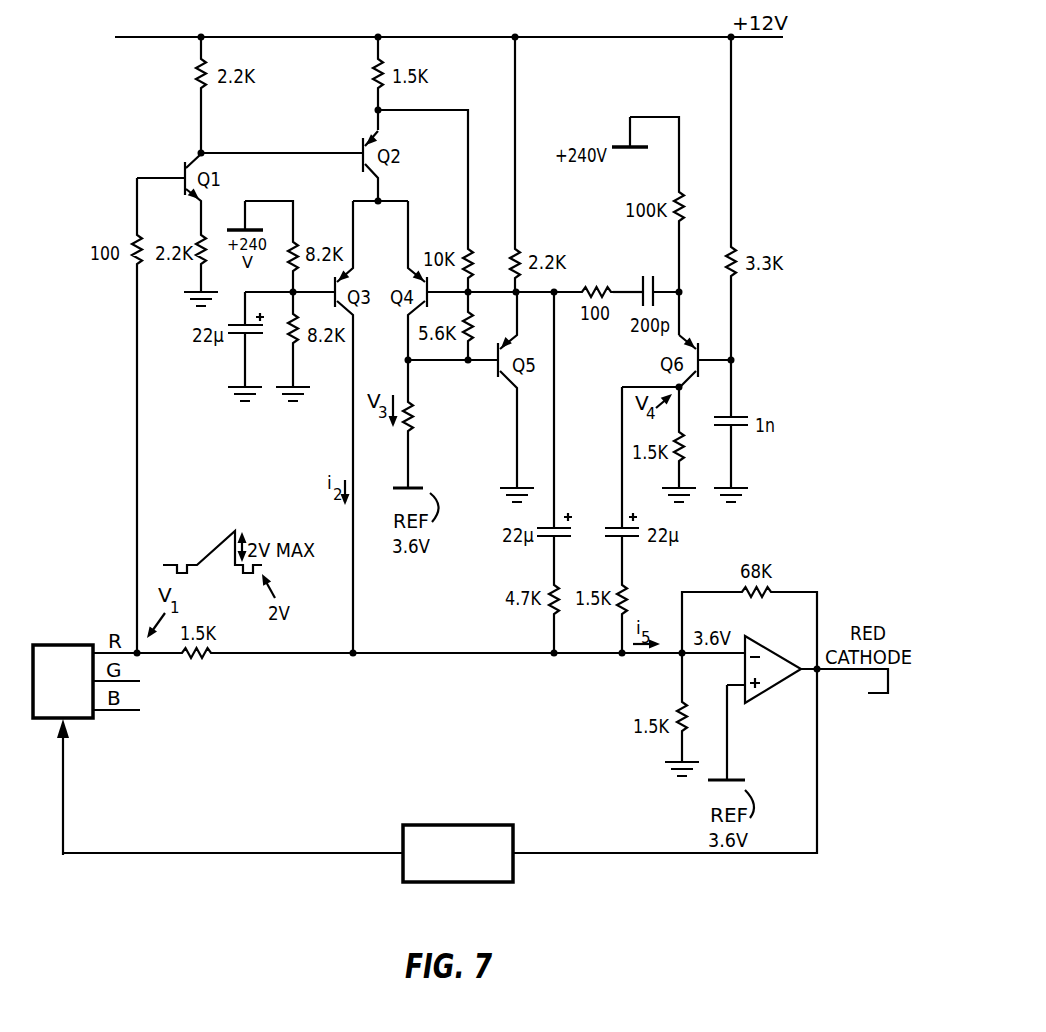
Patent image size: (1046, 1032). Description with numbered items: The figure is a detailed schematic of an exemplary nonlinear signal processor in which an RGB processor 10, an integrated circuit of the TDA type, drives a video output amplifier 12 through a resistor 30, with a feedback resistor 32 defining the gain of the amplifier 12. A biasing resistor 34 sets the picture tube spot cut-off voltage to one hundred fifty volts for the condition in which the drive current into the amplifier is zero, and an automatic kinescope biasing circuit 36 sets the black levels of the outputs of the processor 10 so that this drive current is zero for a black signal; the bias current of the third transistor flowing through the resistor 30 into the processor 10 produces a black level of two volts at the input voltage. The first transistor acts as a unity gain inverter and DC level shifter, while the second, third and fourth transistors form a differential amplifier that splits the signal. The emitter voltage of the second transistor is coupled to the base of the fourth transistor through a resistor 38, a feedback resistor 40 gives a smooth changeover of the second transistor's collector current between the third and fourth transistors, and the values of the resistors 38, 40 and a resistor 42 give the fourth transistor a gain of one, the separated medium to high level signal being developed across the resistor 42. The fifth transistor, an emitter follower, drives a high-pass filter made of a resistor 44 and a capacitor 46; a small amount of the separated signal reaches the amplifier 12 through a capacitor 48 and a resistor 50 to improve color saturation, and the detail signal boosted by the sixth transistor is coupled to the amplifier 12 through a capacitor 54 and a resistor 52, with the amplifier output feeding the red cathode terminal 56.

The RGB processor 10 is at (63, 645).
The video output amplifier 12 is at (780, 738).
The resistor 30 is at (205, 666).
The feedback resistor 32 is at (764, 596).
The biasing resistor 34 is at (687, 717).
The automatic kinescope biasing circuit 36 is at (498, 825).
The resistor 38 is at (472, 253).
The feedback resistor 40 is at (469, 331).
The resistor 42 is at (411, 433).
The resistor 44 is at (585, 289).
The capacitor 46 is at (643, 289).
The capacitor 48 is at (560, 527).
The resistor 50 is at (561, 602).
The resistor 52 is at (626, 592).
The capacitor 54 is at (618, 528).
The red cathode output terminal 56 is at (842, 675).